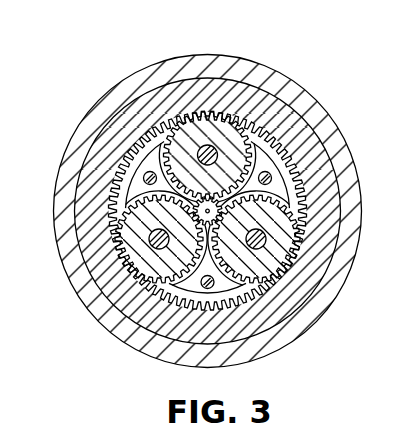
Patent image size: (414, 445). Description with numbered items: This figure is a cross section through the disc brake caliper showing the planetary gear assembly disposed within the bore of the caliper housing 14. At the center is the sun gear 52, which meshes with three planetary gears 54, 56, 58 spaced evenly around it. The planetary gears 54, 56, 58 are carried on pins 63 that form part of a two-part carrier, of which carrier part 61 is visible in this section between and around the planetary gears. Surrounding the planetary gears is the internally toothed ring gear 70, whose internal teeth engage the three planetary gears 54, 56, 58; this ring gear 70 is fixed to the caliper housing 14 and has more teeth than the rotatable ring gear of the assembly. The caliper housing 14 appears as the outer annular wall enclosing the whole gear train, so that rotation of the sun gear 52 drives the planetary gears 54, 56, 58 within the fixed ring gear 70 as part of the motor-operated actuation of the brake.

The caliper housing 14 is at (208, 208).
The sun gear 52 is at (84, 165).
The planetary gear 54 is at (208, 112).
The planetary gear 56 is at (307, 239).
The planetary gear 58 is at (104, 239).
The carrier part 61 is at (244, 204).
The pins 63 is at (215, 177).
The ring gear 70 is at (239, 211).